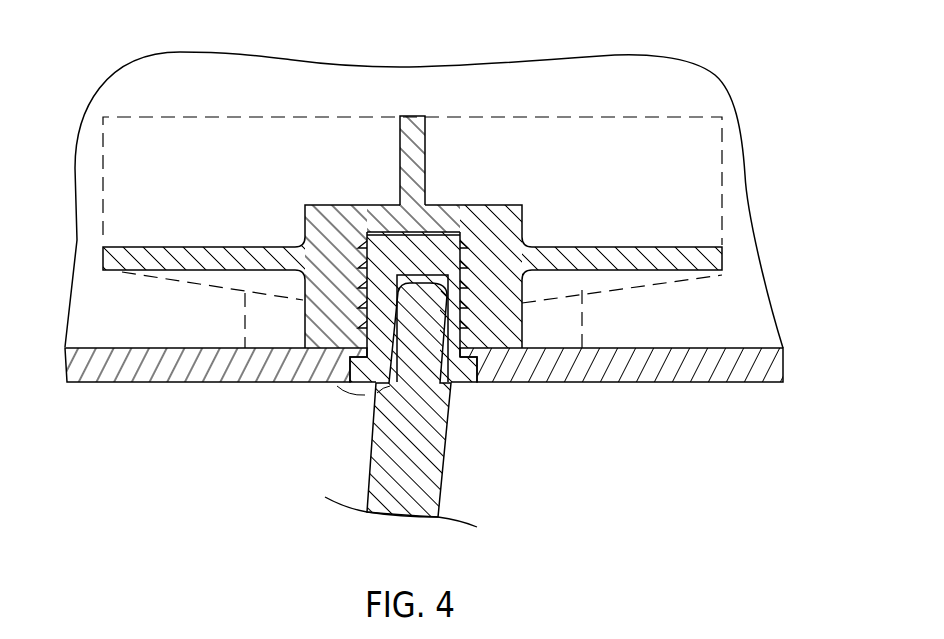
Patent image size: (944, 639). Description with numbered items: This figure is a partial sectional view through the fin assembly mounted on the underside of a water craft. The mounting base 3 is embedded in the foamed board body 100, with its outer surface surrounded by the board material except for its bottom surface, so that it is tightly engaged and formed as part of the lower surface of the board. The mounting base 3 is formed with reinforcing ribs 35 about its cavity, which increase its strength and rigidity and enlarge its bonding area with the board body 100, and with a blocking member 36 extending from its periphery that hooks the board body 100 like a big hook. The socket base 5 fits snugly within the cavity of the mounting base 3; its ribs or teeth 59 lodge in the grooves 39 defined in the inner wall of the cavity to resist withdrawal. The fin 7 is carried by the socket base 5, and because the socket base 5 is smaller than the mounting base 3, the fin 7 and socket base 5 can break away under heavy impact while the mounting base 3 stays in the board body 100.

The board body 100 is at (702, 82).
The mounting base 3 is at (334, 228).
The reinforcing members or ribs 35 is at (412, 128).
The blocking member 36 is at (688, 258).
The grooves 39 is at (466, 325).
The socket base 5 is at (457, 383).
The ribs or teeth 59 is at (462, 324).
The fin 7 is at (357, 449).